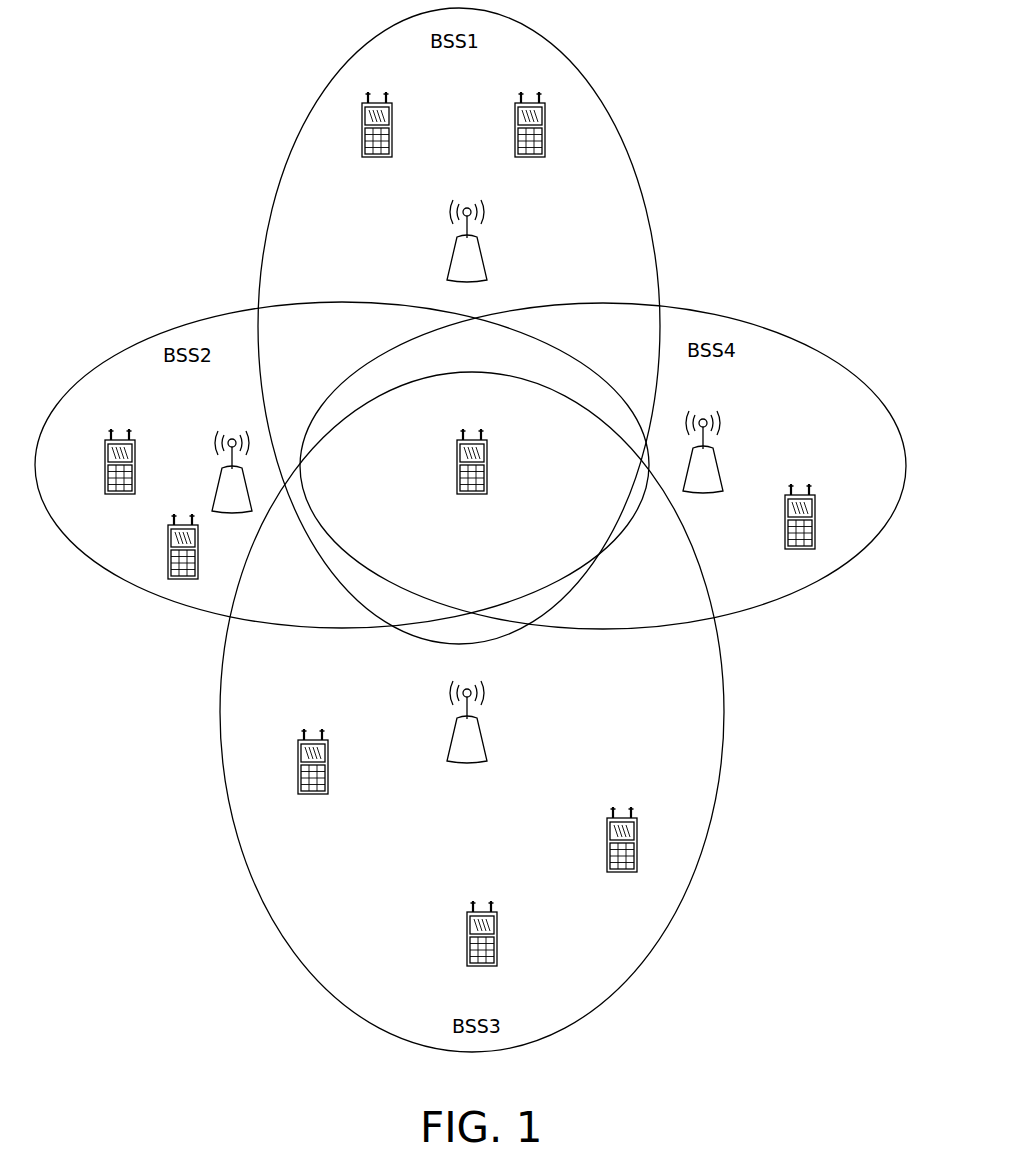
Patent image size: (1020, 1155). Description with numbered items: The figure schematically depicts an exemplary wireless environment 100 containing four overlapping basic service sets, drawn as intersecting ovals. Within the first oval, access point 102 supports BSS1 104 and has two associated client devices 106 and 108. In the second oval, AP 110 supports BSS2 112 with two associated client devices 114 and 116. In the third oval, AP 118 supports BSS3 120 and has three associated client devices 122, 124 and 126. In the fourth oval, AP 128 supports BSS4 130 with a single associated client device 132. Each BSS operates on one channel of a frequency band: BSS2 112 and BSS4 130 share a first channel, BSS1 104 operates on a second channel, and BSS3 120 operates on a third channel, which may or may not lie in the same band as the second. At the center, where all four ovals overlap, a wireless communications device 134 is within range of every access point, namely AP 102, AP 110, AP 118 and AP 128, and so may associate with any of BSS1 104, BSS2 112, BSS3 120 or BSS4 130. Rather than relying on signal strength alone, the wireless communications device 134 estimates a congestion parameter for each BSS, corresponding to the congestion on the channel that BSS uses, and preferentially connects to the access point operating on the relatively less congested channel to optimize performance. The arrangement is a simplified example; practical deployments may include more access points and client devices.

The wireless environment 100 is at (216, 110).
The access point 102 is at (482, 258).
The BSS1 104 is at (630, 157).
The client device 106 is at (392, 125).
The client device 108 is at (515, 125).
The access point 110 is at (215, 493).
The BSS2 112 is at (204, 319).
The client device 114 is at (168, 547).
The client device 116 is at (105, 465).
The access point 118 is at (451, 743).
The BSS3 120 is at (233, 807).
The client device 122 is at (329, 765).
The client device 124 is at (468, 922).
The client device 126 is at (606, 830).
The access point 128 is at (718, 472).
The BSS4 130 is at (699, 312).
The client device 132 is at (815, 517).
The wireless communications device 134 is at (487, 473).